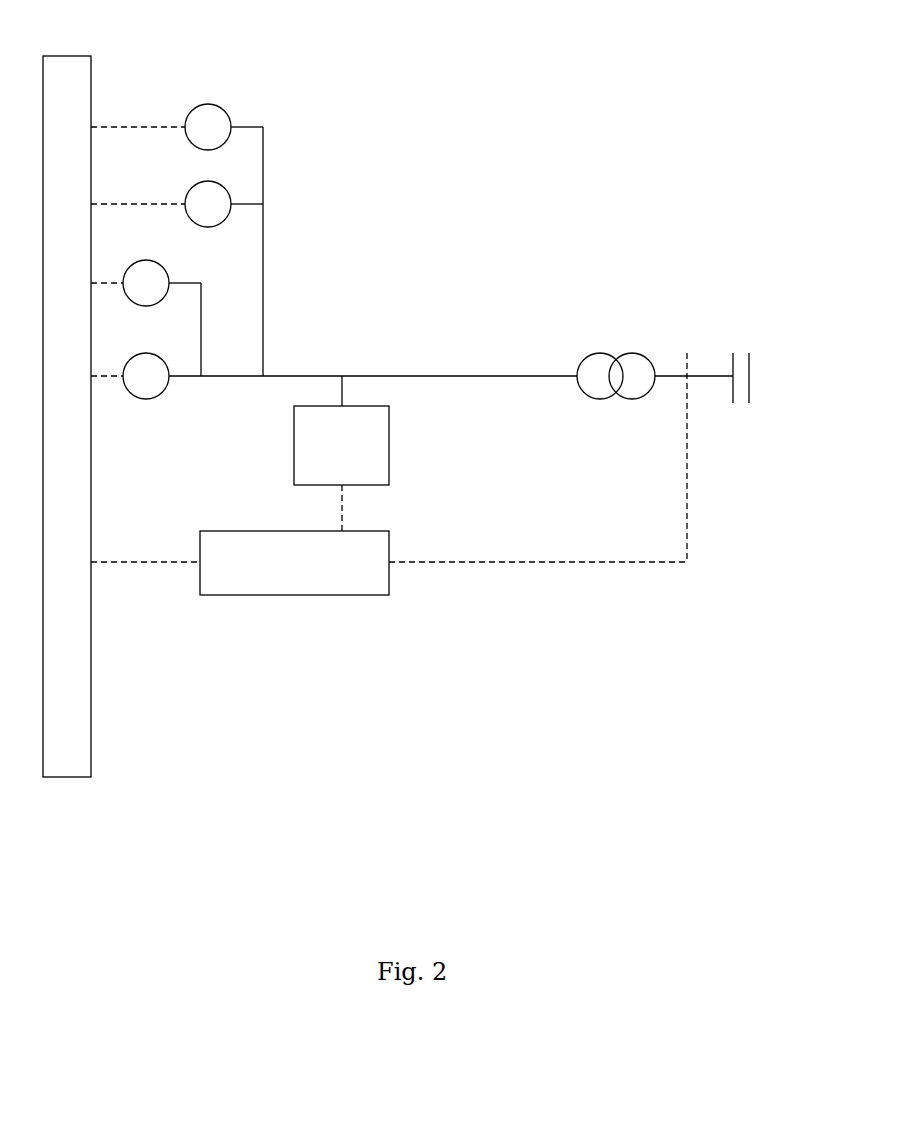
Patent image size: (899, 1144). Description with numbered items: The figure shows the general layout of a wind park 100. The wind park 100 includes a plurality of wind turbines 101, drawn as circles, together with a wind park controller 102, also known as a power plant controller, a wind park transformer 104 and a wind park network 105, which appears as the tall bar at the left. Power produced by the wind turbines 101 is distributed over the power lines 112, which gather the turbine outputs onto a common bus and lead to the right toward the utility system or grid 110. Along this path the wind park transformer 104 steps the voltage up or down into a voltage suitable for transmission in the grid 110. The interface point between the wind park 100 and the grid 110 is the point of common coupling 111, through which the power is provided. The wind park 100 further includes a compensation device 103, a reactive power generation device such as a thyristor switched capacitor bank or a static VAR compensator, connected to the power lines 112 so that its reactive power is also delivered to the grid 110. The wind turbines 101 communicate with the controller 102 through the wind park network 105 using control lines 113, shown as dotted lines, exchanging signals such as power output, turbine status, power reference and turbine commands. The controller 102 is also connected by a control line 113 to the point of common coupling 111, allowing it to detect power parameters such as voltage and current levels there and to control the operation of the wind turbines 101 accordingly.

The wind park 100 is at (545, 117).
The wind turbines 101 is at (214, 182).
The wind park controller 102 is at (294, 563).
The compensation device 103 is at (341, 430).
The wind park transformer 104 is at (600, 353).
The wind park network 105 is at (62, 56).
The utility system or grid 110 is at (738, 347).
The point of common coupling 111 is at (687, 376).
The power lines 112 is at (397, 376).
The control lines 113 is at (122, 127).